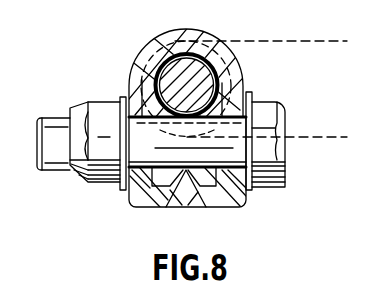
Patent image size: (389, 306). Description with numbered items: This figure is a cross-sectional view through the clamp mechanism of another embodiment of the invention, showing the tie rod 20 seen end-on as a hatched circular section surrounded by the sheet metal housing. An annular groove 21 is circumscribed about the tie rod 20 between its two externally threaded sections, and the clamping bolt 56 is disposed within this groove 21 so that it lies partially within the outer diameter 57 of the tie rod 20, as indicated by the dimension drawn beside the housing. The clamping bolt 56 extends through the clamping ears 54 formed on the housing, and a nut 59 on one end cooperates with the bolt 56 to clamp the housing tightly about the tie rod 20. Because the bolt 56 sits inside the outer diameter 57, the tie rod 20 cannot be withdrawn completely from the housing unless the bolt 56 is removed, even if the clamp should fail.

The tie rod 20 is at (176, 90).
The annular groove 21 is at (137, 47).
The clamping ears 54 is at (217, 196).
The clamping bolt 56 is at (267, 170).
The outer diameter 57 is at (318, 41).
The nut 59 is at (106, 153).